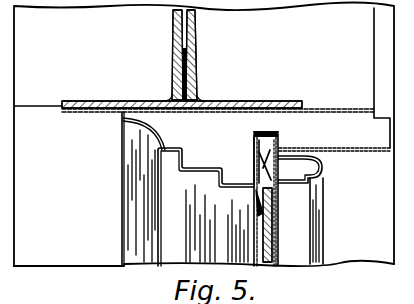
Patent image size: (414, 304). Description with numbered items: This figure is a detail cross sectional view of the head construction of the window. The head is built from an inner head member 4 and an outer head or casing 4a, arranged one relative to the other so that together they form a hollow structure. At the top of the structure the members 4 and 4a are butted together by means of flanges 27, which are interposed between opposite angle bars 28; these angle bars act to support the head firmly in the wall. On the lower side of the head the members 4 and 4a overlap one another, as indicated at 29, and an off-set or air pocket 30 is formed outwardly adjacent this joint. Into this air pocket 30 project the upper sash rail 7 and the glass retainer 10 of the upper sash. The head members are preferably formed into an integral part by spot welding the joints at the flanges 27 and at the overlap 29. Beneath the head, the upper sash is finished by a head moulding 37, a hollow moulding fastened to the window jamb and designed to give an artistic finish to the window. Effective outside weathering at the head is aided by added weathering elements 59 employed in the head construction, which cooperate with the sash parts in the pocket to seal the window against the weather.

The inner head member 4 is at (364, 151).
The outer head or casing 4a is at (134, 167).
The upper sash rail 7 is at (276, 171).
The glass retainer 10 is at (254, 192).
The flanges 27 is at (197, 52).
The angle bars 28 is at (172, 70).
The overlap joint 29 is at (279, 134).
The off-set or air pocket 30 is at (254, 138).
The head moulding 37 is at (304, 222).
The weathering elements 59 is at (259, 153).